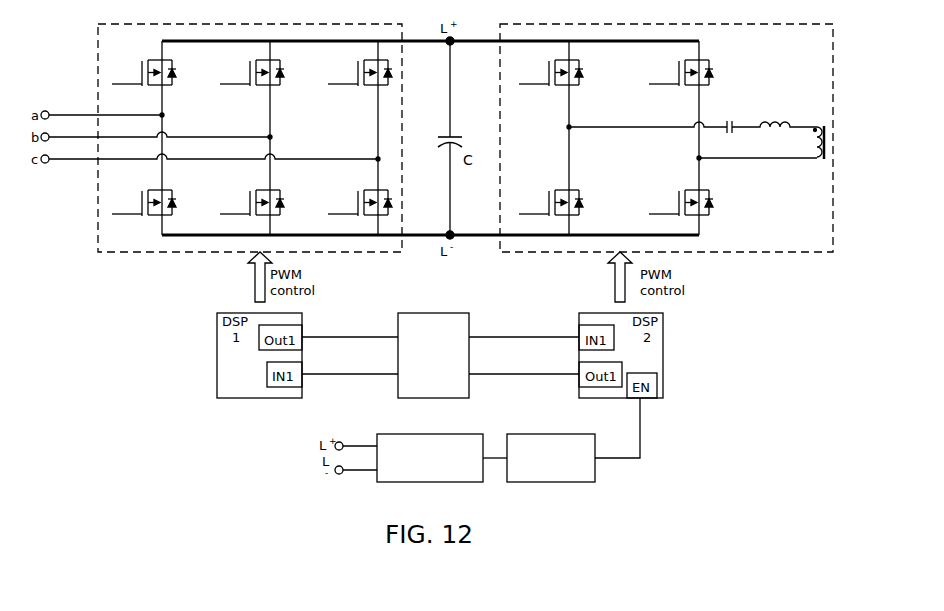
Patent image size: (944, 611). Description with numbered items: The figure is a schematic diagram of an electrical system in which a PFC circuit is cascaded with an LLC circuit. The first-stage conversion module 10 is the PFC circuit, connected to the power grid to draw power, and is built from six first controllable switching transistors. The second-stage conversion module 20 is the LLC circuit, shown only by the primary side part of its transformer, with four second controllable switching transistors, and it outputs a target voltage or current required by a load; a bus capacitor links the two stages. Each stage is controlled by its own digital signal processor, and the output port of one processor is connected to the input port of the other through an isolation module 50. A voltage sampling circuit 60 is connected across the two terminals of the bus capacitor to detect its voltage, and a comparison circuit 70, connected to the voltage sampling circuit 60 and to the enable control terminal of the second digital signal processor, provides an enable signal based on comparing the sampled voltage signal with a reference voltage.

The first-stage conversion module 10 is at (250, 136).
The second-stage conversion module 20 is at (666, 136).
The isolation module 50 is at (433, 355).
The voltage sampling circuit 60 is at (430, 458).
The comparison circuit 70 is at (551, 458).